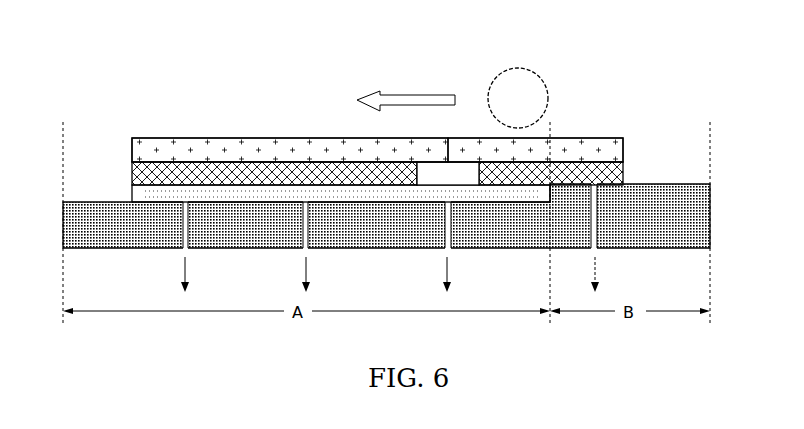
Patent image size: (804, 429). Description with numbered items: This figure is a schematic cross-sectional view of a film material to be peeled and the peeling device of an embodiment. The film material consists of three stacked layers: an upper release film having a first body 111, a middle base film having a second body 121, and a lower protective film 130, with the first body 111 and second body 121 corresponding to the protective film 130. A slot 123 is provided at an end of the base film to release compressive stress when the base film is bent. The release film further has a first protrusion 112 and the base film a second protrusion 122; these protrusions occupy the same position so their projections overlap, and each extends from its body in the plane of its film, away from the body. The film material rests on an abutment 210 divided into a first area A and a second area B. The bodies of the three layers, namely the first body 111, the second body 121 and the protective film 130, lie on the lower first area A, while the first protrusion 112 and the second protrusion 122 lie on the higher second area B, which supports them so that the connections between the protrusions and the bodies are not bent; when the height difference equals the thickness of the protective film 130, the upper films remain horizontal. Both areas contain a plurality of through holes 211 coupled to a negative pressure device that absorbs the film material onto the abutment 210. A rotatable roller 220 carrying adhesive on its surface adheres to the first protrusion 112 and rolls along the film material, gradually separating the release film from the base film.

The first body 111 is at (140, 155).
The first protrusion 112 is at (617, 152).
The second body 121 is at (138, 176).
The second protrusion 122 is at (619, 172).
The slot 123 is at (452, 168).
The protective film 130 is at (138, 198).
The abutment 210 is at (699, 221).
The through holes 211 is at (596, 246).
The roller 220 is at (533, 89).